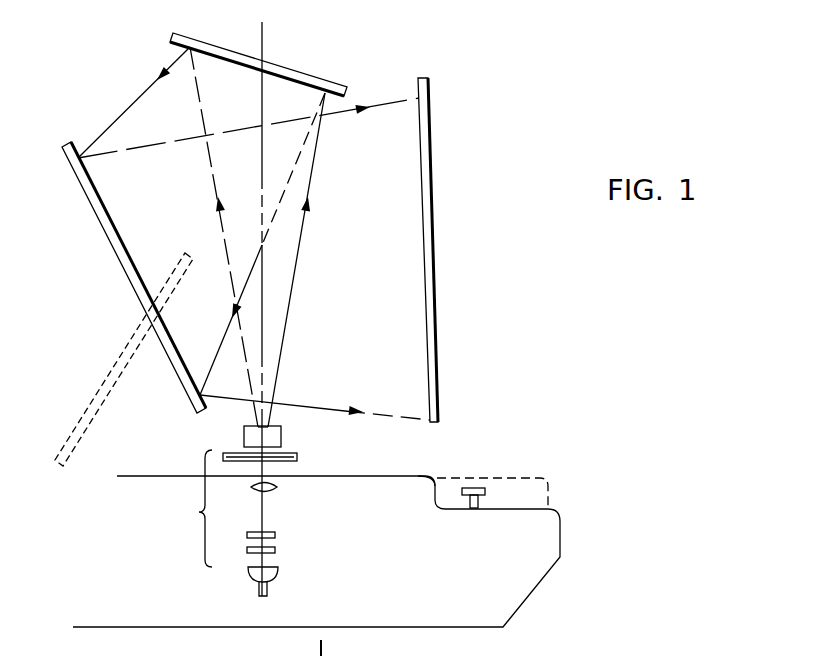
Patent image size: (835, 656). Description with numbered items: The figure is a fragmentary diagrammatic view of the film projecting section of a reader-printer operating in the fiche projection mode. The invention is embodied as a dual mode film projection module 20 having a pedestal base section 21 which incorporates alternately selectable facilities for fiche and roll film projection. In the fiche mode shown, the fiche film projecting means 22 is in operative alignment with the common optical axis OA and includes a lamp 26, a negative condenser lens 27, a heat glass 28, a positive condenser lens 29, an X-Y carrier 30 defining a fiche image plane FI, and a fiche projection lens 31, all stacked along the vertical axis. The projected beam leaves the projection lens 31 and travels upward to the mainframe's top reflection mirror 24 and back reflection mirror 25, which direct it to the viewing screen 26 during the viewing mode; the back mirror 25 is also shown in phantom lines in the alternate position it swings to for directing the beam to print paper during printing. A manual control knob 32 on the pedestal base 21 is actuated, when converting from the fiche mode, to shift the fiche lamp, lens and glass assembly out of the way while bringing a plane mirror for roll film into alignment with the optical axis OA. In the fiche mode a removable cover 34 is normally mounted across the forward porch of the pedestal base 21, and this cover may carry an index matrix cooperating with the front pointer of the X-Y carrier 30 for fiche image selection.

The dual mode film projection module 20 is at (574, 535).
The pedestal base section 21 is at (440, 473).
The fiche film projecting means 22 is at (199, 512).
The top reflection mirror 24 is at (229, 48).
The back reflection mirror 25 is at (103, 226).
The viewing screen / lamp 26 is at (430, 141).
The negative condenser lens 27 is at (281, 550).
The heat glass 28 is at (281, 534).
The positive condenser lens 29 is at (283, 488).
The X-Y carrier 30 is at (305, 453).
The fiche projection lens 31 is at (240, 437).
The manual control knob 32 is at (482, 487).
The removable cover 34 is at (553, 477).
The fiche image plane FI is at (293, 444).
The optical axis OA is at (272, 251).